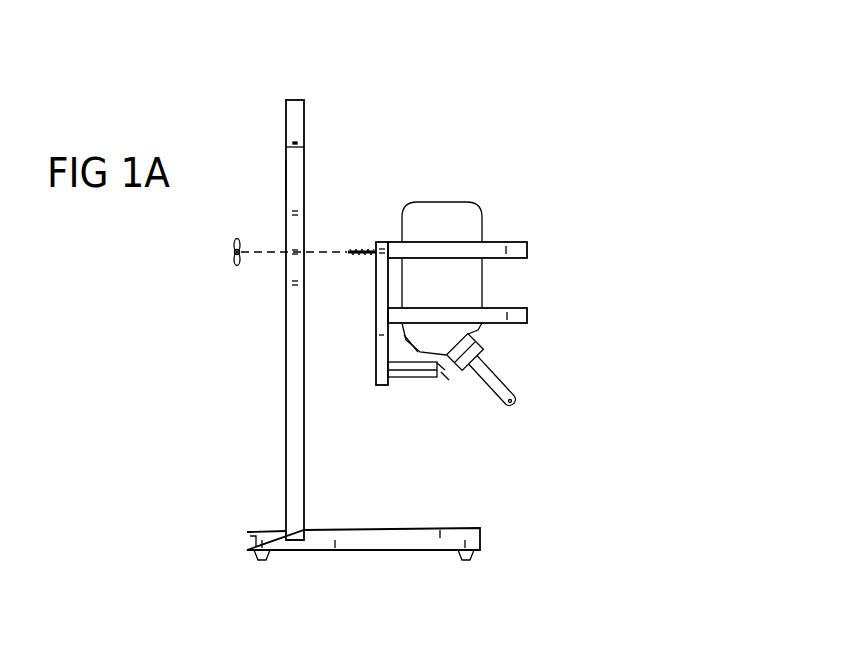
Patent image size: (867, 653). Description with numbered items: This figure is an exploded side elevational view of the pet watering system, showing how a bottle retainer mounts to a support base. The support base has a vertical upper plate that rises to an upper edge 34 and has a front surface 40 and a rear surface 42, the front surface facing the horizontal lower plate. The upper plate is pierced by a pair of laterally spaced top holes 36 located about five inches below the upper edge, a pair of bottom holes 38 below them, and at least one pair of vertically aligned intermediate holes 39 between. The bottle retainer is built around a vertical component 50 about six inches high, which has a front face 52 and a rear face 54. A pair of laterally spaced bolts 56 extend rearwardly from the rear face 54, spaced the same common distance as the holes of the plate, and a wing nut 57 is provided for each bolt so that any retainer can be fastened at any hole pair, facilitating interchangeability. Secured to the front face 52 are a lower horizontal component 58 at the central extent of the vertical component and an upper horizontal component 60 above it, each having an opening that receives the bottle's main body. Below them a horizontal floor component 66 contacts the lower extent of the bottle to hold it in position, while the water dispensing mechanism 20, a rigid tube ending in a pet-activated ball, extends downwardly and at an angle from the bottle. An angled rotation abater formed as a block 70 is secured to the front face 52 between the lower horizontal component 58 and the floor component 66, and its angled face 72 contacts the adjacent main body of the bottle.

The upper edge 34 is at (287, 100).
The rear surface 42 is at (284, 183).
The front surface 40 is at (305, 158).
The top holes 36 is at (285, 213).
The wing nut 57 is at (234, 252).
The intermediate holes 39 is at (285, 254).
The bottom holes 38 is at (285, 285).
The bolts 56 is at (360, 258).
The vertical component 50 is at (381, 243).
The upper horizontal component 60 is at (527, 252).
The lower horizontal component 58 is at (527, 312).
The water dispensing mechanism 20 is at (502, 382).
The rear face 54 is at (377, 355).
The horizontal floor component 66 is at (402, 375).
The front face 52 is at (400, 348).
The angled face 72 is at (437, 363).
The block 70 is at (441, 372).